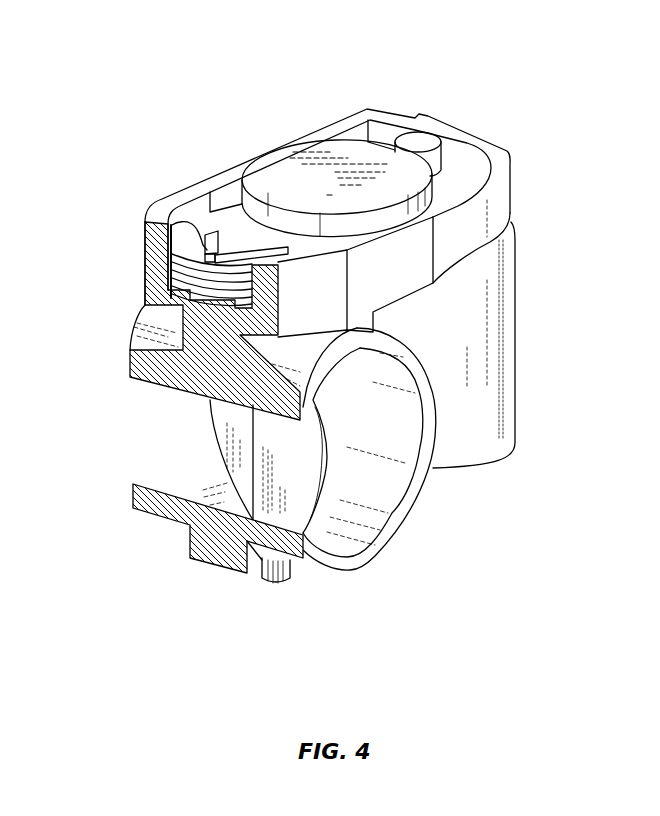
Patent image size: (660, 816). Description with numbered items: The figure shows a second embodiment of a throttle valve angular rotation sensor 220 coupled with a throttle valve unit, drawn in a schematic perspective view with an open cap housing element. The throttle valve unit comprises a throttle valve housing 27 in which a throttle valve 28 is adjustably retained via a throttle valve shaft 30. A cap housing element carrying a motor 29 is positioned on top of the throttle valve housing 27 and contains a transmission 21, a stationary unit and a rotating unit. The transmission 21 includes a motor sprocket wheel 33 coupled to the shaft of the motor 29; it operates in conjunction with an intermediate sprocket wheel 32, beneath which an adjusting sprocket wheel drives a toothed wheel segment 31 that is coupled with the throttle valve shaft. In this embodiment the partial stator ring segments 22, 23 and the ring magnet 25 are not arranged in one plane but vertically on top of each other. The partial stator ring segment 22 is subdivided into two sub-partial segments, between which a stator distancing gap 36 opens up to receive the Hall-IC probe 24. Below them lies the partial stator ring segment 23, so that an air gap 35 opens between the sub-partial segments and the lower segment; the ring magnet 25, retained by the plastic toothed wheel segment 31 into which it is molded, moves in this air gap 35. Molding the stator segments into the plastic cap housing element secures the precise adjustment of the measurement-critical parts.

The transmission 21 is at (292, 91).
The throttle valve angular rotation sensor 220 is at (568, 139).
The partial stator ring segment 22 is at (172, 226).
The partial stator ring segment 23 is at (145, 261).
The Hall-IC probe 24 is at (205, 234).
The ring magnet 25 is at (183, 293).
The throttle valve housing 27 is at (202, 565).
The throttle valve 28 is at (318, 458).
The motor 29 is at (478, 455).
The throttle valve shaft 30 is at (283, 573).
The toothed wheel segment 31 is at (230, 223).
The intermediate sprocket wheel 32 is at (276, 167).
The motor sprocket wheel 33 is at (428, 140).
The air gap 35 is at (145, 238).
The stator distancing gap 36 is at (173, 273).